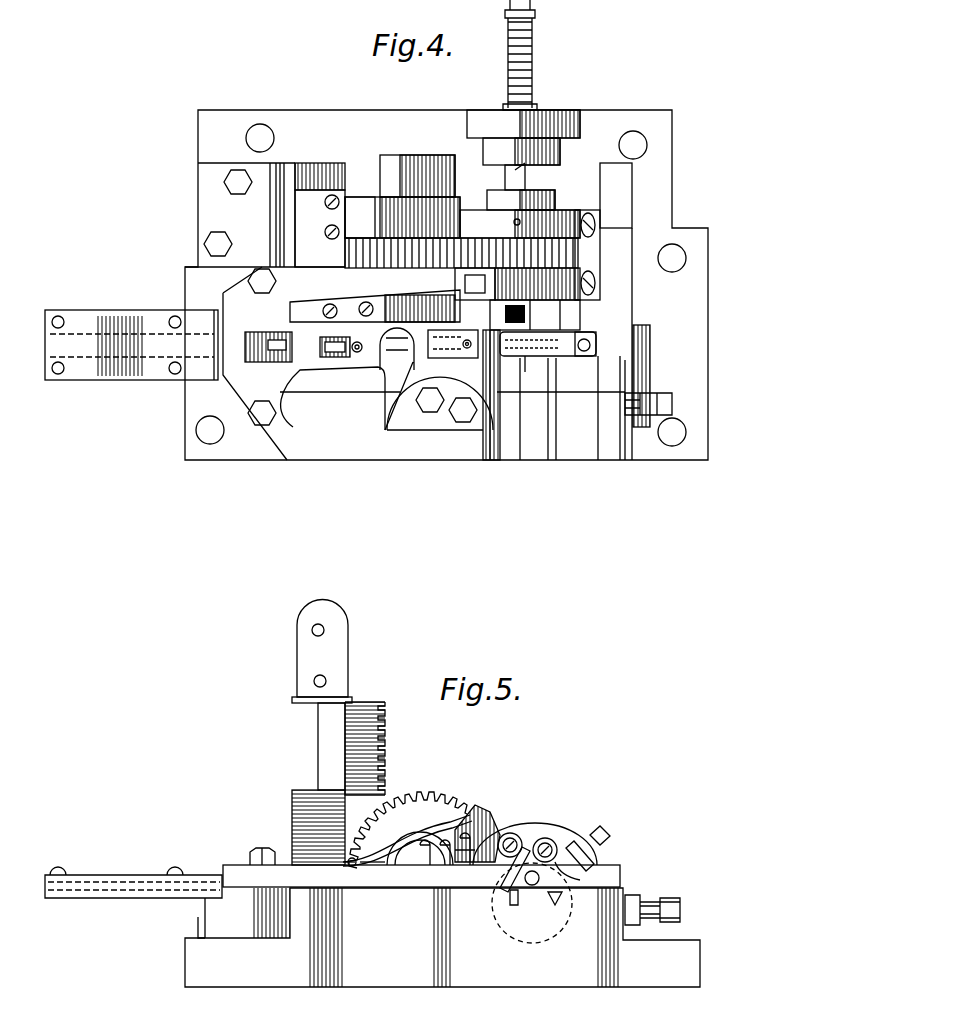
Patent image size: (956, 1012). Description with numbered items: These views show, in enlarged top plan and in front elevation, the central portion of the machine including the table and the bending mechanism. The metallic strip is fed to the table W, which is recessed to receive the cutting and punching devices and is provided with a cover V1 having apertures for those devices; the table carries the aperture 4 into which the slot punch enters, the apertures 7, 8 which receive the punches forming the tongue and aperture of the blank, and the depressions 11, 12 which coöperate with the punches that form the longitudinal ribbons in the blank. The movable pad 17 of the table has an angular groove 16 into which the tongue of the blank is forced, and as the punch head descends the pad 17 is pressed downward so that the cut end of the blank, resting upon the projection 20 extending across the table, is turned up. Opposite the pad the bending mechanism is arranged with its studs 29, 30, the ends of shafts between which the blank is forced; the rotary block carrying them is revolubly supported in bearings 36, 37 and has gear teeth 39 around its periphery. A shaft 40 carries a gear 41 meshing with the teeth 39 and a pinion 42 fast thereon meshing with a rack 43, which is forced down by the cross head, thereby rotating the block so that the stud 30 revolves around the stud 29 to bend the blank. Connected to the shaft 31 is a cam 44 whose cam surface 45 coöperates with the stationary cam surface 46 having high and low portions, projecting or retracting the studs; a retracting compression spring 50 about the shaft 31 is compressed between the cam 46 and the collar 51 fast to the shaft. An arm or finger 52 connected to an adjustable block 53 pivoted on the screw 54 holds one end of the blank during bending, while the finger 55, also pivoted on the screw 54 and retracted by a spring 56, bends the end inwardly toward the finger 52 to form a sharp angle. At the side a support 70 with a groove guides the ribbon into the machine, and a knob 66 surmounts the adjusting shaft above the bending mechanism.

In FIG. 4, the collar 51 is at (535, 14).
In FIG. 4, the shaft 31 is at (532, 52).
In FIG. 4, the retracting compression spring 50 is at (532, 78).
In FIG. 4, the knob disc 66 is at (487, 118).
In FIG. 4, the rack 43 is at (360, 220).
In FIG. 5, the rack 43 is at (385, 730).
In FIG. 4, the shaft 40 is at (418, 155).
In FIG. 4, the pinion 42 is at (400, 215).
In FIG. 4, the stationary cam surface 46 is at (512, 170).
In FIG. 4, the cam surface 45 is at (540, 165).
In FIG. 4, the cam 44 is at (540, 195).
In FIG. 4, the bearing 37 is at (580, 223).
In FIG. 4, the gear 41 is at (395, 255).
In FIG. 5, the gear 41 is at (425, 790).
In FIG. 4, the gear teeth 39 is at (530, 245).
In FIG. 4, the bearing 36 is at (540, 282).
In FIG. 4, the finger 55 is at (470, 290).
In FIG. 5, the finger 55 is at (485, 815).
In FIG. 4, the spring 56 is at (375, 306).
In FIG. 5, the spring 56 is at (430, 822).
In FIG. 4, the adjustable block 53 is at (535, 315).
In FIG. 5, the adjustable block 53 is at (530, 832).
In FIG. 4, the movable pad 17 is at (575, 348).
In FIG. 4, the angular groove 16 is at (560, 355).
In FIG. 5, the angular groove 16 is at (560, 900).
In FIG. 4, the screw 54 is at (525, 356).
In FIG. 5, the screw 54 is at (512, 840).
In FIG. 4, the aperture 4 is at (280, 340).
In FIG. 4, the depression 12 is at (440, 358).
In FIG. 4, the depression 11 is at (395, 380).
In FIG. 4, the aperture 7 is at (338, 357).
In FIG. 4, the aperture 8 is at (358, 352).
In FIG. 4, the support 70 is at (72, 316).
In FIG. 5, the support 70 is at (105, 898).
In FIG. 4, the projection 20 is at (487, 460).
In FIG. 4, the table W is at (305, 383).
In FIG. 5, the table W is at (352, 887).
In FIG. 4, the cover V1 is at (242, 375).
In FIG. 5, the cover V1 is at (380, 887).
In FIG. 5, the arm or finger 52 is at (500, 888).
In FIG. 5, the stud 29 is at (540, 905).
In FIG. 5, the stud 30 is at (580, 880).